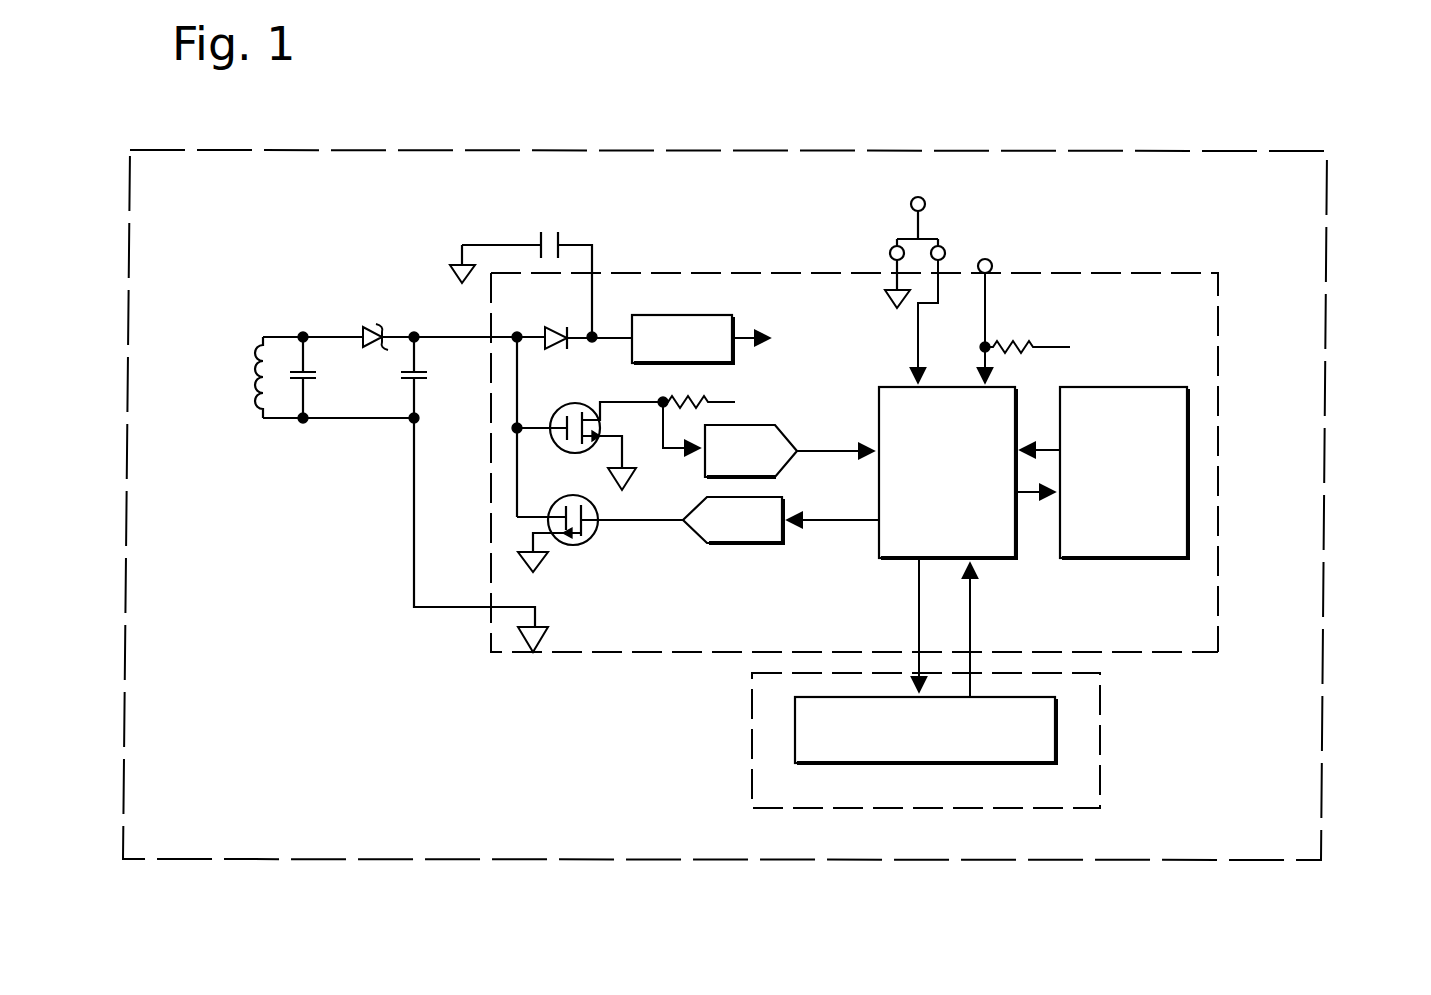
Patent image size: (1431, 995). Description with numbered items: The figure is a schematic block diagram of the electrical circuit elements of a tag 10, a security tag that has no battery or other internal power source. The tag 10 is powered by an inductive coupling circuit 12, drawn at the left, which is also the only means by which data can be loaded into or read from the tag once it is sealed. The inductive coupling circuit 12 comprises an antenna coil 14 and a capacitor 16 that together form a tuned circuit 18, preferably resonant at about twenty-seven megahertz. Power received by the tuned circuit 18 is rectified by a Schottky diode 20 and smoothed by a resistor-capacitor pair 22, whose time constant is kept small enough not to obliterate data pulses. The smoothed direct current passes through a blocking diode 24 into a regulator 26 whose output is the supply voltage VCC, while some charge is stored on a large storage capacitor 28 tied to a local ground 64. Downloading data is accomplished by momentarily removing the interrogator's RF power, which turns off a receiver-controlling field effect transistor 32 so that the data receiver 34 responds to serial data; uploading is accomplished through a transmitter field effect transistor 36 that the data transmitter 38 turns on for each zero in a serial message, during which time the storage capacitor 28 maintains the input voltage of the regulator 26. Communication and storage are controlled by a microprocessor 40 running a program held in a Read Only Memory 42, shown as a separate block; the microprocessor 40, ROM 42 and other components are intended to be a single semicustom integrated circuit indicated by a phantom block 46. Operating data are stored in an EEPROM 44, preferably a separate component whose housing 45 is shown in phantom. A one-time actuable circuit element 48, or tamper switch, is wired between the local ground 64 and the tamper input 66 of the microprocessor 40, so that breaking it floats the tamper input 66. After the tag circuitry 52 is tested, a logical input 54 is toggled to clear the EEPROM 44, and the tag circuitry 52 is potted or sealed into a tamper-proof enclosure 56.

The tag 10 is at (652, 102).
The inductive coupling circuit 12 is at (288, 289).
The antenna coil 14 is at (255, 378).
The capacitor 16 is at (318, 382).
The tuned circuit 18 is at (277, 434).
The Schottky diode 20 is at (378, 326).
The resistor-capacitor pair 22 is at (432, 382).
The blocking diode 24 is at (558, 325).
The regulator 26 is at (690, 316).
The storage capacitor 28 is at (550, 232).
The receiver-controlling field effect transistor 32 is at (588, 402).
The data receiver 34 is at (773, 437).
The transmitter field effect transistor 36 is at (578, 545).
The data transmitter 38 is at (758, 545).
The microprocessor 40 is at (900, 563).
The Read Only Memory 42 is at (1145, 563).
The EEPROM 44 is at (1058, 713).
The housing 45 is at (1102, 746).
The phantom block 46 is at (1190, 274).
The one-time actuable circuit element 48 is at (942, 225).
The tag circuitry 52 is at (686, 664).
The logical input 54 is at (994, 260).
The tamper-proof enclosure 56 is at (1300, 151).
The local ground 64 is at (548, 632).
The tamper input 66 is at (915, 385).